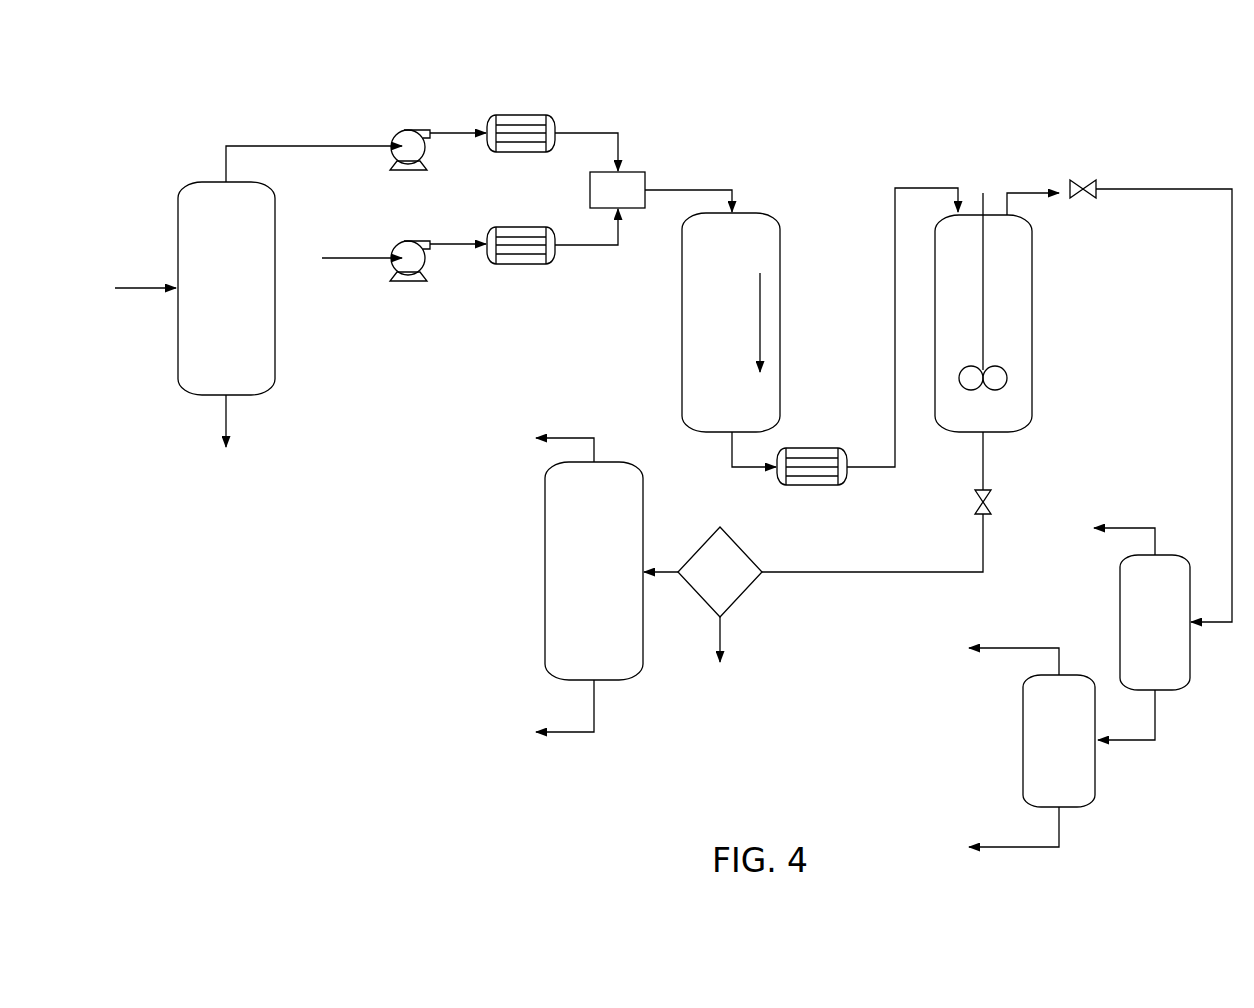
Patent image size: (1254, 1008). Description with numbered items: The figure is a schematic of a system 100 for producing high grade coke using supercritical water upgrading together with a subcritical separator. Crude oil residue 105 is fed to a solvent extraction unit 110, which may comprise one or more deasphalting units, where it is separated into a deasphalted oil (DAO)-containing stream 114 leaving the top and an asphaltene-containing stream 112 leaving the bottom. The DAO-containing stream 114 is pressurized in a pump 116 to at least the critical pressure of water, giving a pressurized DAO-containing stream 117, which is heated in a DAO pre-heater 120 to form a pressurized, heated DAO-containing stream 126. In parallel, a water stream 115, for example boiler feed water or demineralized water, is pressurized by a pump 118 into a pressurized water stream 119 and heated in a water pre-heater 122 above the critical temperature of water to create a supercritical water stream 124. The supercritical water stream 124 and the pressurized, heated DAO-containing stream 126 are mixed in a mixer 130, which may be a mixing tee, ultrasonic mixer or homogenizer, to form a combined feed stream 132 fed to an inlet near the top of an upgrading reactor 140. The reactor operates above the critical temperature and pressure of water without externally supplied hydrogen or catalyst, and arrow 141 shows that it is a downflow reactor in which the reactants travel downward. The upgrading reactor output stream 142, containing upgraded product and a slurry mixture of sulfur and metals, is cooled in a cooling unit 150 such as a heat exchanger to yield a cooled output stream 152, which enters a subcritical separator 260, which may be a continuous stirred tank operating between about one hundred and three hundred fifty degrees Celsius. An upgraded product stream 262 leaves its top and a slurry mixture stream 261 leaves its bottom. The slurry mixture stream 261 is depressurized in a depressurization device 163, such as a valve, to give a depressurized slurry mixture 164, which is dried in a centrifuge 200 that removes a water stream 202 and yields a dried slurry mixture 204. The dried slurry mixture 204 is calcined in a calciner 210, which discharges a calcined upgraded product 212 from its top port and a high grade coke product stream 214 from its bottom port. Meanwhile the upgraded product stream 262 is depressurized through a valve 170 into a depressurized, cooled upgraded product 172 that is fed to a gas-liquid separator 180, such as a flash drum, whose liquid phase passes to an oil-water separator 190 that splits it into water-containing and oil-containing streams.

The system 100 is at (173, 147).
The crude oil residue 105 is at (134, 288).
The solvent extraction unit 110 is at (210, 301).
The asphaltene-containing stream 112 is at (228, 417).
The DAO-containing stream 114 is at (334, 146).
The water stream 115 is at (345, 258).
The pump 116 is at (408, 130).
The pressurized DAO-containing stream 117 is at (448, 133).
The pump 118 is at (418, 241).
The pressurized water stream 119 is at (462, 244).
The DAO pre-heater 120 is at (524, 115).
The water pre-heater 122 is at (518, 227).
The supercritical water stream 124 is at (592, 245).
The pressurized, heated DAO-containing stream 126 is at (593, 133).
The mixer 130 is at (633, 201).
The combined feed stream 132 is at (686, 190).
The upgrading reactor 140 is at (728, 334).
The arrow 141 is at (762, 323).
The upgrading reactor output stream 142 is at (728, 446).
The cooling unit 150 is at (814, 448).
The cooled output stream 152 is at (895, 305).
The depressurization device 163 is at (990, 499).
The depressurized slurry mixture 164 is at (842, 572).
The valve 170 is at (1088, 188).
The depressurized, cooled upgraded product 172 is at (1232, 340).
The gas-liquid separator 180 is at (1171, 633).
The oil-water separator 190 is at (1075, 751).
The centrifuge 200 is at (704, 583).
The water stream 202 is at (722, 640).
The dried slurry mixture 204 is at (660, 572).
The calciner 210 is at (609, 583).
The calcined upgraded product 212 is at (570, 438).
The high grade coke product stream 214 is at (576, 732).
The subcritical separator 260 is at (967, 416).
The slurry mixture stream 261 is at (985, 455).
The upgraded product stream 262 is at (1040, 190).